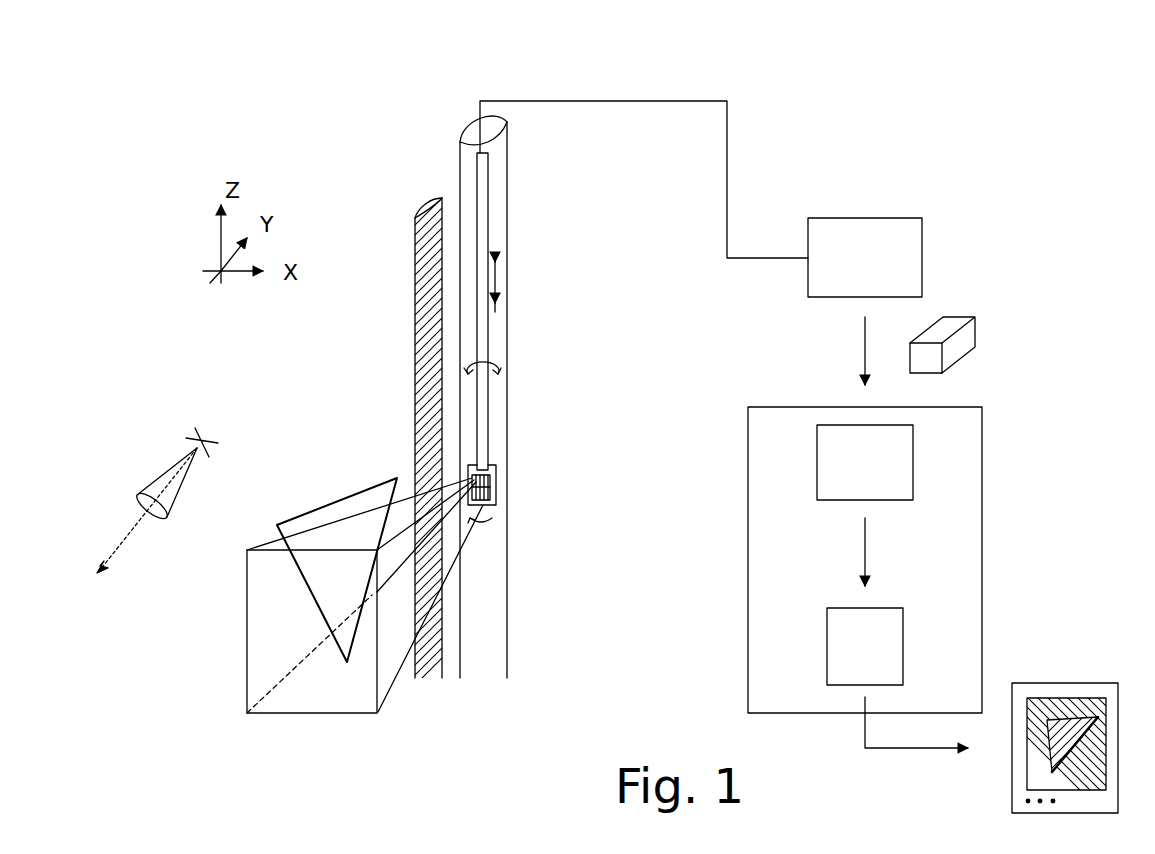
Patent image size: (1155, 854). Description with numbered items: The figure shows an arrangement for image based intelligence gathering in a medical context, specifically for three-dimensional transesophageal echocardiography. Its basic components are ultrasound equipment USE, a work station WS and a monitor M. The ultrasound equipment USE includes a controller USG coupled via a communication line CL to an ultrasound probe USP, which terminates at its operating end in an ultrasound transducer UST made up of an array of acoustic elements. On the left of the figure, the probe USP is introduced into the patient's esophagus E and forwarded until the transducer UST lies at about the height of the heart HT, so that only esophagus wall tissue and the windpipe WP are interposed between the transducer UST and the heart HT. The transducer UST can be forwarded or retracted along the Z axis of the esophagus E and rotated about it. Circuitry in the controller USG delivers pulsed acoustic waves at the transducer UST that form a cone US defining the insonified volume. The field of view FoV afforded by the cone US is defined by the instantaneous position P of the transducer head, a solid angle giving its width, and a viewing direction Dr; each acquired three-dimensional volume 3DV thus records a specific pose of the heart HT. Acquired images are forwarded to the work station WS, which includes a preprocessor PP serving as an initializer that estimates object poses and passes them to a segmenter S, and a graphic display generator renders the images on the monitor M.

The communication line CL is at (552, 101).
The ultrasound equipment USE is at (762, 90).
The controller USG is at (893, 230).
The 3D volume 3DV is at (965, 335).
The work station WS is at (968, 520).
The preprocessor PP is at (913, 453).
The segmenter S is at (903, 632).
The monitor M is at (1095, 690).
The windpipe WP is at (415, 245).
The ultrasound probe USP is at (488, 225).
The esophagus E is at (507, 415).
The ultrasound transducer UST is at (496, 483).
The cone US is at (388, 657).
The heart HT is at (340, 515).
The field of view FoV is at (205, 495).
The position P is at (208, 436).
The viewing direction Dr is at (120, 545).